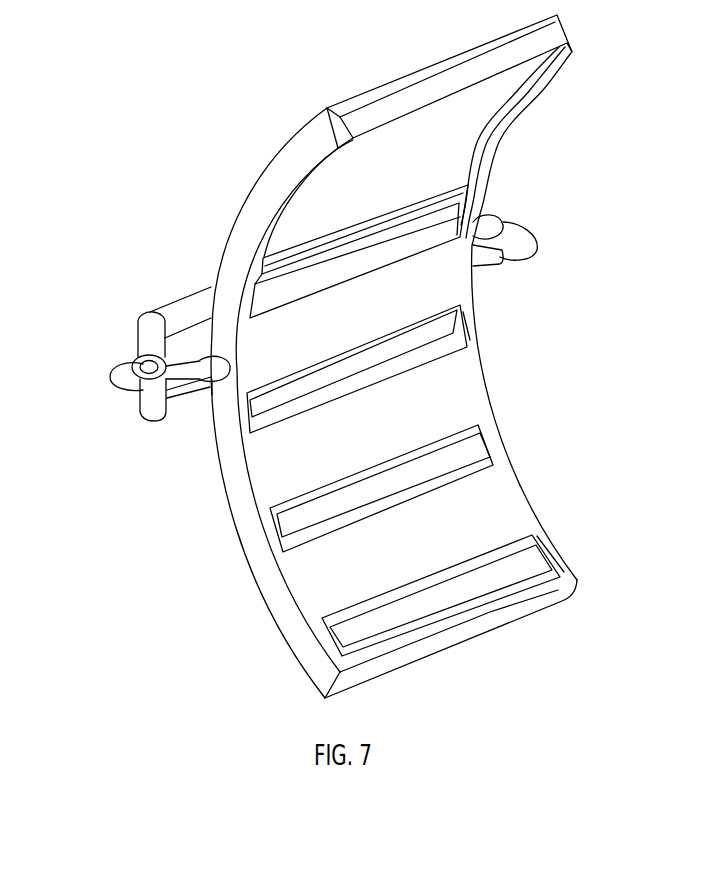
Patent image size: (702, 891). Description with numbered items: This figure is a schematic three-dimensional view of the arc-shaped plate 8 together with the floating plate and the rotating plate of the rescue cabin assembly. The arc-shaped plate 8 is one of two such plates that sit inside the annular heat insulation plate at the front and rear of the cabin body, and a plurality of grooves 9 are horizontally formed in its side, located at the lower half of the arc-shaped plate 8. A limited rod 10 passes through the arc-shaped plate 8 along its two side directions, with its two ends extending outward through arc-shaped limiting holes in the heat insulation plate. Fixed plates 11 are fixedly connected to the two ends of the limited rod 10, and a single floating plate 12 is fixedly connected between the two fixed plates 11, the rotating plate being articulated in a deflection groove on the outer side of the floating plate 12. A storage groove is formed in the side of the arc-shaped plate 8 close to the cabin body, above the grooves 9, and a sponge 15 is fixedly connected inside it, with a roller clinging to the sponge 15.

The arc-shaped plate 8 is at (234, 233).
The groove 9 is at (486, 444).
The limited rod 10 is at (210, 377).
The fixed plate 11 is at (132, 388).
The floating plate 12 is at (152, 329).
The sponge 15 is at (383, 105).